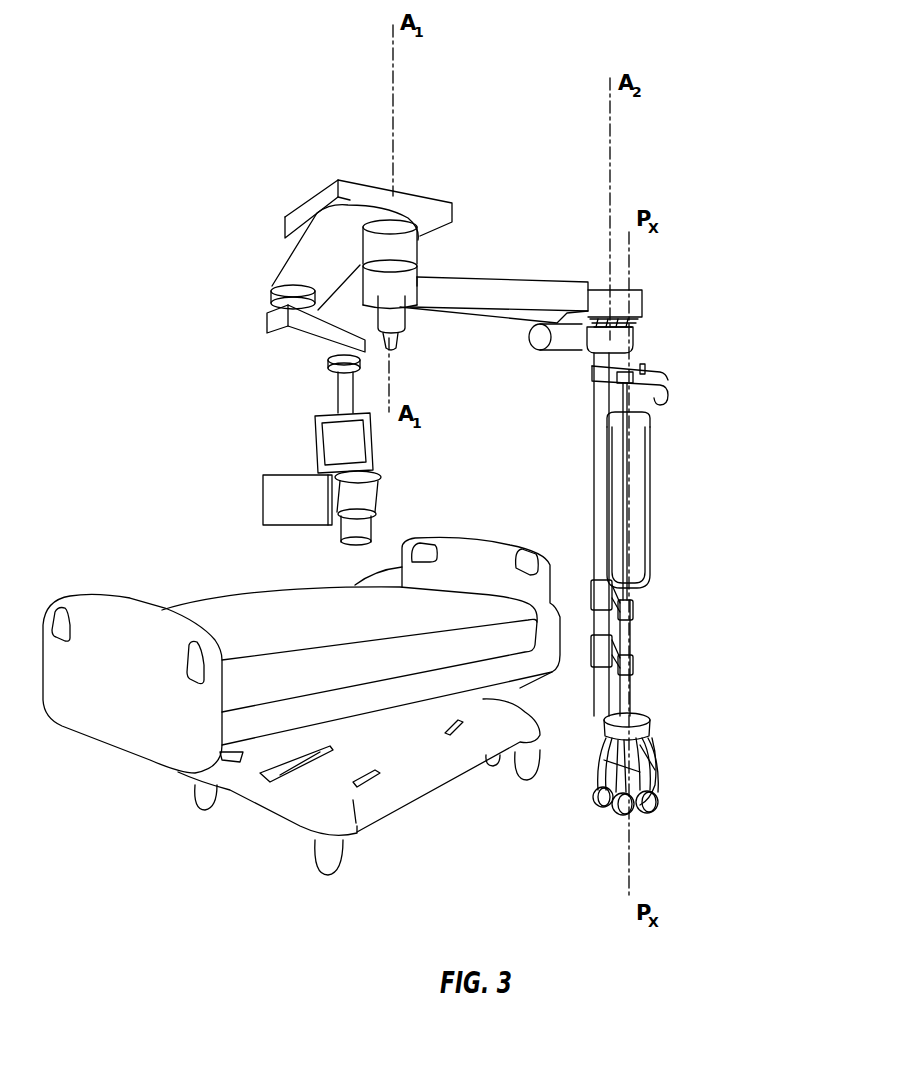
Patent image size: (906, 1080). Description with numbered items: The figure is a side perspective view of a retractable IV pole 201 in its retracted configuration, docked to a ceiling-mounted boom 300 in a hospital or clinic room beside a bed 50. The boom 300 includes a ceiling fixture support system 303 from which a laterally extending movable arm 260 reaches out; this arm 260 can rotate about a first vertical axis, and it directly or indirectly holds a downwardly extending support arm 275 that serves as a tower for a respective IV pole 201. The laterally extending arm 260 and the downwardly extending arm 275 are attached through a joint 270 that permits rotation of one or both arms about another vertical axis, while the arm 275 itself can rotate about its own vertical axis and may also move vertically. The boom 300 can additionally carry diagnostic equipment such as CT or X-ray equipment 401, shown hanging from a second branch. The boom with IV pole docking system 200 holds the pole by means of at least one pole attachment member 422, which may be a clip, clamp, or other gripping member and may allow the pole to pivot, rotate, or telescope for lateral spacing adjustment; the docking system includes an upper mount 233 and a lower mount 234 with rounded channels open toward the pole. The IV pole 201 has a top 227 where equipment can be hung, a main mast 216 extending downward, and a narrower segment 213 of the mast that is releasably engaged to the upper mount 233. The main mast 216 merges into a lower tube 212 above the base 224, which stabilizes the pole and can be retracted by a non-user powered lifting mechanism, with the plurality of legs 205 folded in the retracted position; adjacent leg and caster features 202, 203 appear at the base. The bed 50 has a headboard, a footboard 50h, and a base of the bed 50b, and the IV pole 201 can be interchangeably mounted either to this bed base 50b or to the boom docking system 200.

The boom 300 is at (216, 150).
The ceiling fixture support system 303 is at (369, 193).
The joint 270 is at (577, 292).
The laterally extending arm 260 is at (479, 293).
The CT or X-ray equipment 401 is at (357, 493).
The boom with IV pole docking system 200 is at (527, 225).
The downwardly extending support arm 275 is at (598, 470).
The top 227 is at (655, 363).
The IV pole 201 is at (676, 438).
The main mast 216 is at (627, 513).
The pole attachment member 422 is at (596, 596).
The narrower segment of the main mast 213 is at (628, 594).
The upper mount 233 is at (633, 610).
The lower mount 234 is at (633, 663).
The lower tube 212 is at (630, 697).
The base 224 is at (640, 717).
The legs 205 is at (600, 752).
The wheels 202 is at (623, 820).
The gripper arm 203 is at (652, 733).
The bed 50 is at (388, 617).
The bed footboard 50h is at (477, 550).
The base of the bed 50b is at (423, 757).